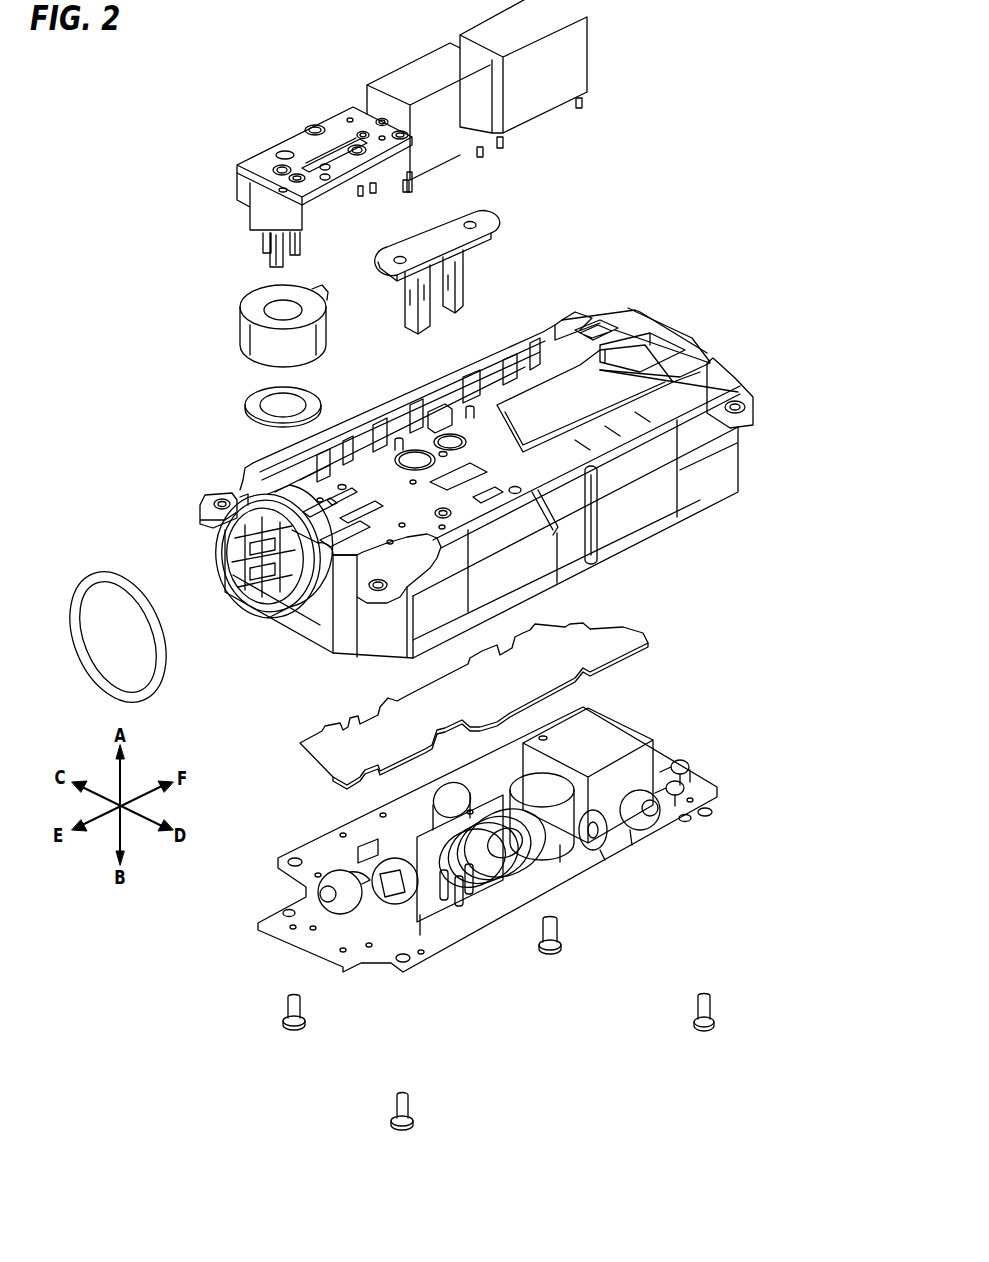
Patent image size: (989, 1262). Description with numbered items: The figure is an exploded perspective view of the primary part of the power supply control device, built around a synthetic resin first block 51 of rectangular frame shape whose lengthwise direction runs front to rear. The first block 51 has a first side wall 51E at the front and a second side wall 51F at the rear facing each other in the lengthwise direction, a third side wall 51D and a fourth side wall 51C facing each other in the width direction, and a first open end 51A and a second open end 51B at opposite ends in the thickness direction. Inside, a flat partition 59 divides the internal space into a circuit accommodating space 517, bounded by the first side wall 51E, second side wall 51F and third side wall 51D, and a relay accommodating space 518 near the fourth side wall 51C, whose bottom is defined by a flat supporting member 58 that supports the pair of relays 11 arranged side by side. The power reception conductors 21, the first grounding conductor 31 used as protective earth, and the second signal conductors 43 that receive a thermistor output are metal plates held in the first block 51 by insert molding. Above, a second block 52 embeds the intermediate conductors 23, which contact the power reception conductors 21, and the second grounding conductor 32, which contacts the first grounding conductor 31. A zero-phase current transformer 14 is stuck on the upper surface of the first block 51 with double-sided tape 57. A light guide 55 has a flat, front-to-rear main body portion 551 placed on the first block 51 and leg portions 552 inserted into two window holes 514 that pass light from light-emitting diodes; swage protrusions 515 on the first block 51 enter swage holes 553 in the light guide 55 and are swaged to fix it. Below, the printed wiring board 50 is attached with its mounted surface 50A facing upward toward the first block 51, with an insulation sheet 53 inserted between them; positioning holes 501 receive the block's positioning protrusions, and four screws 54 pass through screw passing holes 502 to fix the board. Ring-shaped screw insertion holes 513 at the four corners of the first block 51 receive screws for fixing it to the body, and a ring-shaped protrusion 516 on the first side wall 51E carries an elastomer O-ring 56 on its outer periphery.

The relay 11 is at (398, 80).
The zero-phase current transformer 14 is at (240, 330).
The power reception conductor 21 is at (247, 503).
The intermediate conductor 23 is at (297, 253).
The first grounding conductor 31 is at (245, 608).
The second grounding conductor 32 is at (272, 248).
The second signal conductor 43 is at (225, 562).
The printed wiring board 50 is at (484, 863).
The mounted surface 50A is at (720, 752).
The first block 51 is at (462, 476).
The first open end 51A is at (545, 347).
The second open end 51B is at (570, 577).
The fourth side wall 51C is at (423, 378).
The third side wall 51D is at (683, 523).
The first side wall 51E is at (303, 628).
The second side wall 51F is at (597, 327).
The second block 52 is at (288, 137).
The insulation sheet 53 is at (318, 760).
The screw 54 is at (395, 1103).
The light guide 55 is at (464, 250).
The O-ring 56 is at (100, 580).
The double-sided tape 57 is at (252, 403).
The supporting member 58 is at (435, 418).
The partition 59 is at (538, 402).
The positioning hole 501 is at (283, 913).
The screw passing hole 502 is at (292, 857).
The screw insertion hole 513 is at (208, 500).
The window hole 514 is at (533, 490).
The swage protrusion 515 is at (383, 428).
The protrusion 516 is at (228, 580).
The circuit accommodating space 517 is at (625, 357).
The relay accommodating space 518 is at (497, 363).
The main body portion 551 is at (483, 217).
The leg portion 552 is at (458, 293).
The swage hole 553 is at (470, 225).